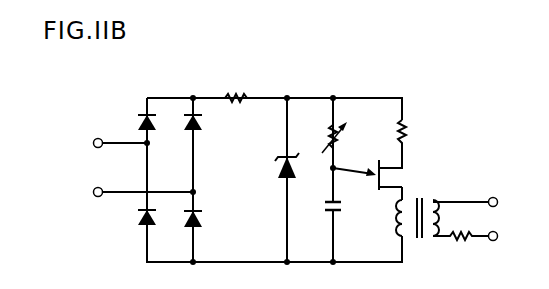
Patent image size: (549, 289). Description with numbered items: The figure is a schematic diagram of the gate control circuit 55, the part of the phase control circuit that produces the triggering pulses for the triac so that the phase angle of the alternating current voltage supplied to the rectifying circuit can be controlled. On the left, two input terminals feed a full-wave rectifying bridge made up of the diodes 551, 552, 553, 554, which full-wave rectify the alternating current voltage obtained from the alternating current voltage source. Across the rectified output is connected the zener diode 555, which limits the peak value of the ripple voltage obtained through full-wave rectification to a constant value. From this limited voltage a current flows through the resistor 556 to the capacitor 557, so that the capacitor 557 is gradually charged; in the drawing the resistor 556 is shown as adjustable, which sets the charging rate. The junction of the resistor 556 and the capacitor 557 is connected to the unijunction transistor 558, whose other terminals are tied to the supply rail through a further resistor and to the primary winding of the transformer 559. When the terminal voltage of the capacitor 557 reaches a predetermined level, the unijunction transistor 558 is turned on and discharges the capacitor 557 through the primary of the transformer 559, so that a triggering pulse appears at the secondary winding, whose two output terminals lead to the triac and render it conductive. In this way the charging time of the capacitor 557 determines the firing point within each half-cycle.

The gate control circuit 55 is at (422, 58).
The diode 551 is at (138, 121).
The diode 552 is at (139, 219).
The diode 553 is at (206, 119).
The diode 554 is at (206, 216).
The zener diode 555 is at (276, 176).
The resistor 556 is at (340, 141).
The capacitor 557 is at (325, 209).
The unijunction transistor 558 is at (378, 191).
The transformer 559 is at (425, 198).